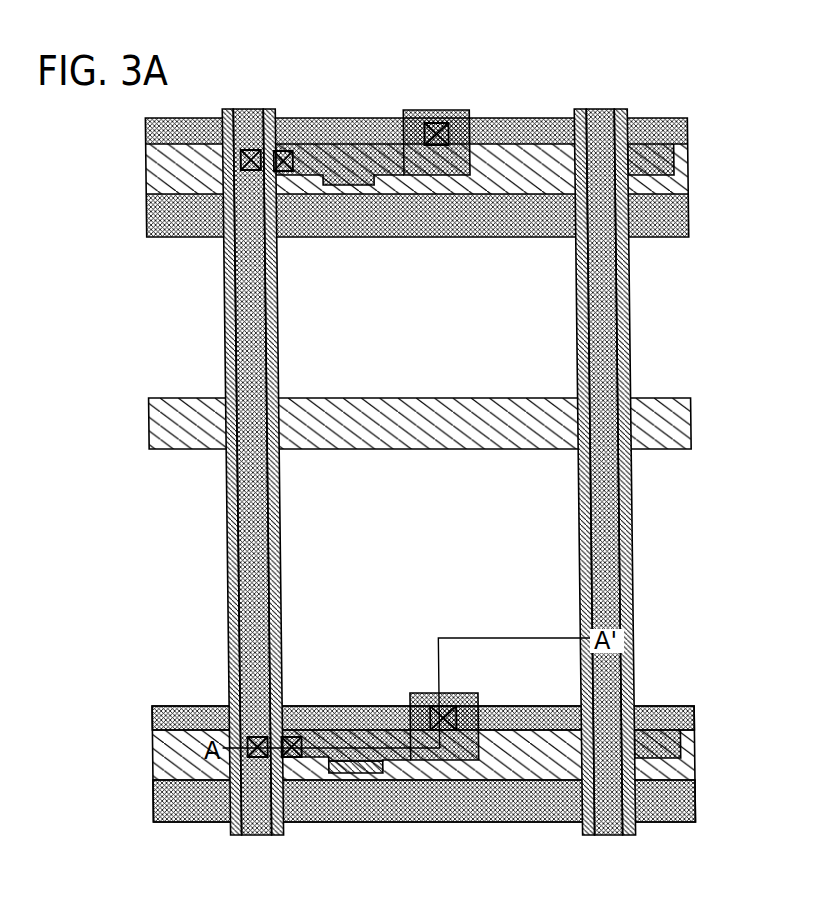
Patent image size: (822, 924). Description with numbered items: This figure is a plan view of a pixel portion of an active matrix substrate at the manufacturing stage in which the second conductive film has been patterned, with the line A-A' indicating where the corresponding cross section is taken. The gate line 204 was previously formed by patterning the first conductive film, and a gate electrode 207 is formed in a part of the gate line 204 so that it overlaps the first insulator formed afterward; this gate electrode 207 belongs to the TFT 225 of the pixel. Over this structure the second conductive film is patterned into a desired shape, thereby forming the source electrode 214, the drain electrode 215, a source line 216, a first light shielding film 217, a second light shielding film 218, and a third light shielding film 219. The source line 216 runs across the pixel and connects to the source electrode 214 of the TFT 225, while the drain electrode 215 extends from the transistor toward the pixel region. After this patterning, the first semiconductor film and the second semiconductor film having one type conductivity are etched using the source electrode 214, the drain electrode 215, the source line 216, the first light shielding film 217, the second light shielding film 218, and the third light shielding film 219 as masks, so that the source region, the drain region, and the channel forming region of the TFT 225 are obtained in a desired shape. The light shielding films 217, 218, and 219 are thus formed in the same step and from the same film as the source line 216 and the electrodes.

The gate line 204 is at (197, 763).
The gate electrode 207 is at (403, 823).
The source electrode 214 is at (312, 767).
The drain electrode 215 is at (443, 782).
The source line 216 is at (227, 320).
The first light shielding film 217 is at (230, 670).
The second light shielding film 218 is at (230, 593).
The third light shielding film 219 is at (562, 702).
The TFT 225 is at (350, 777).